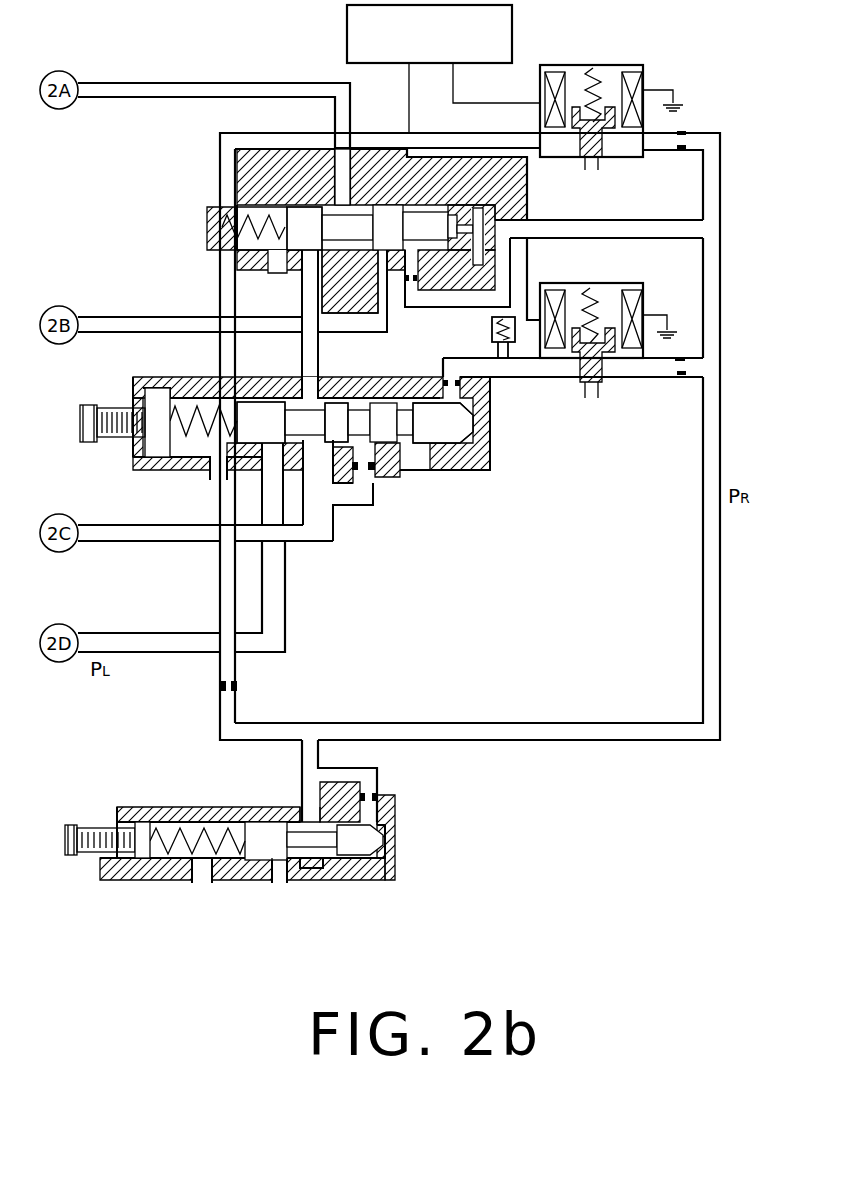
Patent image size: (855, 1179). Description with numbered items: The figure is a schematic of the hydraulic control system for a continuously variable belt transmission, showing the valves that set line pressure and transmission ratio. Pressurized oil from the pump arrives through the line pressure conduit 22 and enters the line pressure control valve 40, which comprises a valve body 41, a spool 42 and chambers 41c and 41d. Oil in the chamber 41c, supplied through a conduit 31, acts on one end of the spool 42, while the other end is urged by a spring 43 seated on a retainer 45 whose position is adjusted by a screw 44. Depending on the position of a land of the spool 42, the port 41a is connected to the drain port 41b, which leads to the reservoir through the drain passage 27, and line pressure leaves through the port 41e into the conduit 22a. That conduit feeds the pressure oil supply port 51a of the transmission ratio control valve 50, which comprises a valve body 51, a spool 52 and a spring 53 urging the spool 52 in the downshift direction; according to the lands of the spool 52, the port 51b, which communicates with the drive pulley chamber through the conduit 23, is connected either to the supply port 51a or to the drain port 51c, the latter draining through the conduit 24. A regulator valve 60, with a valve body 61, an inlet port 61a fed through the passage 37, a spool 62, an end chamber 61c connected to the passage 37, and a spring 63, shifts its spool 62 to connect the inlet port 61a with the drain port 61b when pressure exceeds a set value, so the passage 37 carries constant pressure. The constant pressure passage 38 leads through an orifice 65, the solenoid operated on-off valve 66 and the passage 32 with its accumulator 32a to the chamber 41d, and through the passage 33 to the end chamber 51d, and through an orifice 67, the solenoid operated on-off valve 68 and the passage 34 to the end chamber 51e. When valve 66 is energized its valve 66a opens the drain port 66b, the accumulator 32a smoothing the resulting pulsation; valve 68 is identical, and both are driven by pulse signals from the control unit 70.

The control unit 70 is at (513, 33).
The solenoid operated on-off valve 68 is at (638, 65).
The orifice 67 is at (688, 132).
The passage 34 is at (448, 142).
The passage 33 is at (615, 220).
The solenoid operated on-off valve 66 is at (635, 283).
The valve 66a is at (605, 370).
The drain port 66b is at (590, 398).
The orifice 65 is at (682, 376).
The conduit 23 is at (178, 88).
The conduit 24 is at (190, 328).
The line pressure conduit 22 is at (150, 525).
The conduit 22a is at (302, 300).
The drain passage 27 is at (142, 635).
The passage 37 is at (272, 725).
The constant pressure passage 38 is at (703, 568).
The transmission ratio control valve 50 is at (463, 192).
The valve body 51 is at (393, 200).
The pressure oil supply port 51a is at (283, 265).
The port 51b is at (342, 200).
The drain port 51c is at (352, 291).
The end chamber 51d is at (412, 280).
The end chamber 51e is at (222, 240).
The spool 52 is at (292, 210).
The spring 53 is at (215, 215).
The passage 32 is at (525, 342).
The accumulator 32a is at (478, 405).
The line pressure control valve 40 is at (459, 481).
The valve body 41 is at (425, 400).
The port 41a is at (313, 445).
The drain port 41b is at (268, 465).
The chamber 41c is at (378, 460).
The chamber 41d is at (470, 447).
The port 41e is at (292, 400).
The spool 42 is at (335, 405).
The spring 43 is at (212, 405).
The screw 44 is at (90, 445).
The retainer 45 is at (158, 455).
The conduit 31 is at (362, 503).
The regulator valve 60 is at (418, 829).
The valve body 61 is at (170, 870).
The inlet port 61a is at (302, 815).
The drain port 61b is at (287, 878).
The end chamber 61c is at (378, 862).
The spool 62 is at (262, 860).
The spring 63 is at (205, 820).